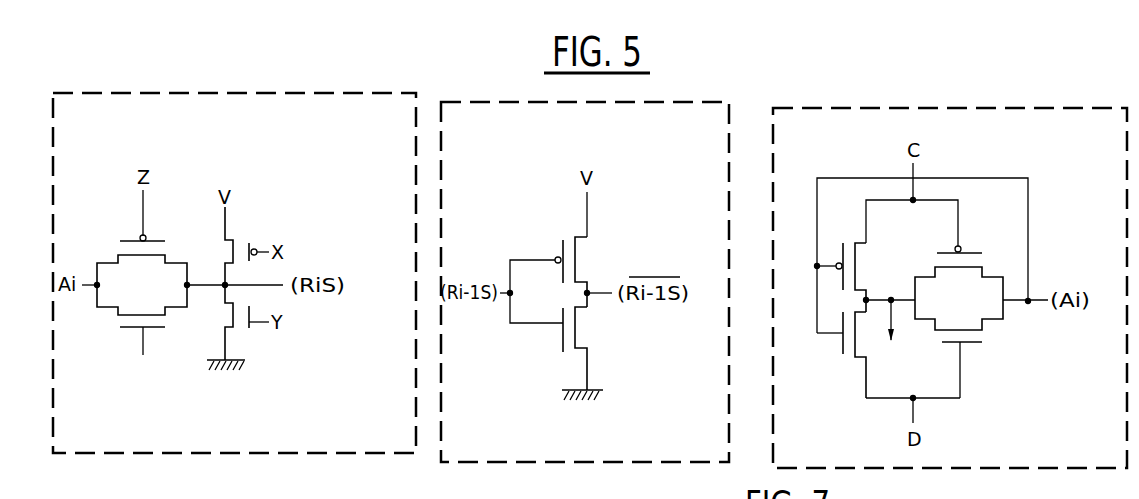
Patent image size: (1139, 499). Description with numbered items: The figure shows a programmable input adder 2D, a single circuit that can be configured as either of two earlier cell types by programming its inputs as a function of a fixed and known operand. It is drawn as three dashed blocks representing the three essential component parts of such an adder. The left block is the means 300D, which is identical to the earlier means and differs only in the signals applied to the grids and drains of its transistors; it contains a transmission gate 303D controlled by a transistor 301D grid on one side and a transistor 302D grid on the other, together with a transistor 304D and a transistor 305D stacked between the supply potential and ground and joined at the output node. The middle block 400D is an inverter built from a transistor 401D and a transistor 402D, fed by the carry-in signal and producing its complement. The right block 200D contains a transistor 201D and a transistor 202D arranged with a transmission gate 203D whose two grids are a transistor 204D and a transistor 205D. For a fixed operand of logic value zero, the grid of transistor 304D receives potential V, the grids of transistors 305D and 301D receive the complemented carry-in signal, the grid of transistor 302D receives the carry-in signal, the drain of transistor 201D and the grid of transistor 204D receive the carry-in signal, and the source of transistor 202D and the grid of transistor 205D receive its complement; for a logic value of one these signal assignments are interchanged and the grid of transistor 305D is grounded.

The programmable input adder 2D is at (341, 84).
The means 300D is at (290, 456).
The transistor 301D is at (118, 246).
The transistor 302D is at (118, 322).
The transmission gate 303D is at (222, 287).
The transistor 304D is at (226, 252).
The transistor 305D is at (226, 322).
The inverter circuit block 400D is at (609, 464).
The p-channel transistor of inverter 401D is at (567, 237).
The n-channel transistor of inverter 402D is at (567, 351).
The latch circuit block 200D is at (1005, 470).
The transistor 201D is at (860, 265).
The transistor 202D is at (848, 356).
The transmission gate 203D is at (892, 298).
The transistor 204D is at (982, 263).
The transistor 205D is at (983, 341).